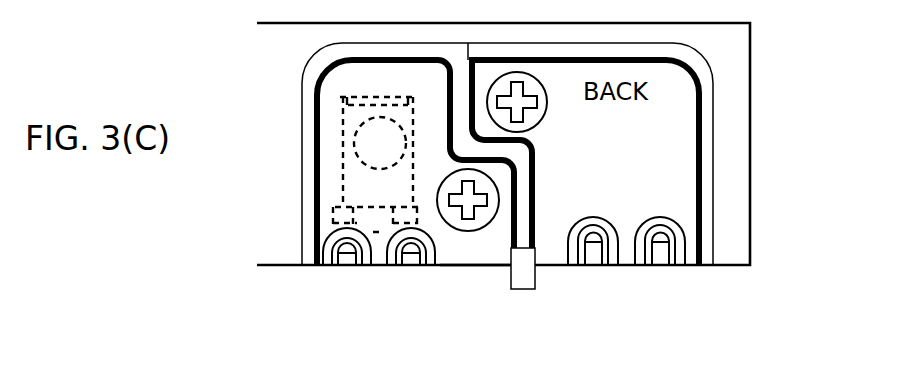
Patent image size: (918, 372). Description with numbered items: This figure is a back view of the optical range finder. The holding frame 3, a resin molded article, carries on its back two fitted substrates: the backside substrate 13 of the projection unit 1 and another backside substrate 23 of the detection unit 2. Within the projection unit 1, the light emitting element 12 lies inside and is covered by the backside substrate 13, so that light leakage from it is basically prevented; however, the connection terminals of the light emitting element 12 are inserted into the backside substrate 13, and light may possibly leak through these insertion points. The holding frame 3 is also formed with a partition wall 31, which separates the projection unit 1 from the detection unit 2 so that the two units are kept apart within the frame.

The projection unit 1 is at (372, 273).
The detection unit 2 is at (655, 276).
The holding frame 3 is at (737, 238).
The light emitting element 12 is at (356, 179).
The backside substrate 13 is at (478, 247).
The backside substrate 23 is at (666, 123).
The partition wall 31 is at (533, 175).